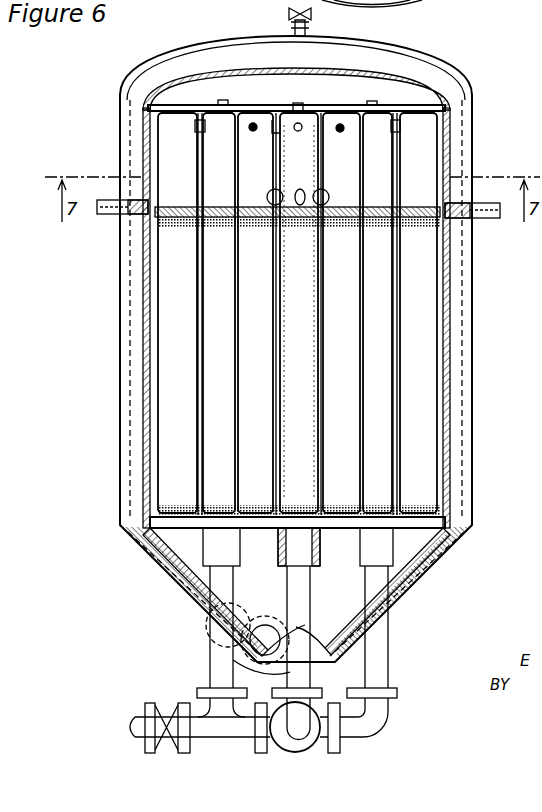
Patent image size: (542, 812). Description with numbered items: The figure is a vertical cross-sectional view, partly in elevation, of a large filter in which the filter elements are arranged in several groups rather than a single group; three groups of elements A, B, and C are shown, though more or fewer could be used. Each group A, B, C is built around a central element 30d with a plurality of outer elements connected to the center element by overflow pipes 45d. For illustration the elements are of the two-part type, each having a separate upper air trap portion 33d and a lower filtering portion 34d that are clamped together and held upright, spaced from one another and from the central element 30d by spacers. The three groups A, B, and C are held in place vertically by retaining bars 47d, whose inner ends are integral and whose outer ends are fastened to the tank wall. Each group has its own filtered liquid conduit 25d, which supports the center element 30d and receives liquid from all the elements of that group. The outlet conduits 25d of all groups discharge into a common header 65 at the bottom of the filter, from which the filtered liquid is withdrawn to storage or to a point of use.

The retaining bars 47d is at (406, 98).
The upper air trap portion 33d is at (158, 150).
The overflow pipes 45d is at (281, 197).
The lower filtering portion 34d is at (160, 360).
The central element 30d is at (299, 312).
The filtered liquid conduit 25d is at (318, 578).
The common header 65 is at (200, 715).
The group of elements A is at (160, 400).
The group of elements B is at (299, 313).
The group of elements C is at (438, 422).